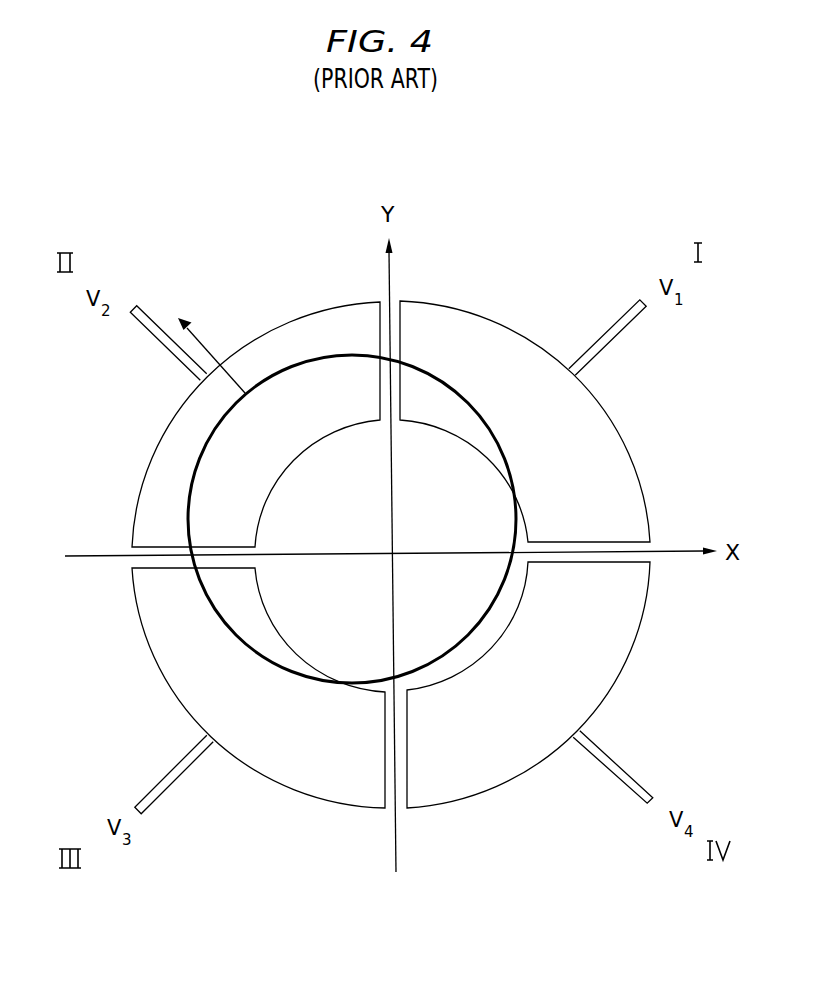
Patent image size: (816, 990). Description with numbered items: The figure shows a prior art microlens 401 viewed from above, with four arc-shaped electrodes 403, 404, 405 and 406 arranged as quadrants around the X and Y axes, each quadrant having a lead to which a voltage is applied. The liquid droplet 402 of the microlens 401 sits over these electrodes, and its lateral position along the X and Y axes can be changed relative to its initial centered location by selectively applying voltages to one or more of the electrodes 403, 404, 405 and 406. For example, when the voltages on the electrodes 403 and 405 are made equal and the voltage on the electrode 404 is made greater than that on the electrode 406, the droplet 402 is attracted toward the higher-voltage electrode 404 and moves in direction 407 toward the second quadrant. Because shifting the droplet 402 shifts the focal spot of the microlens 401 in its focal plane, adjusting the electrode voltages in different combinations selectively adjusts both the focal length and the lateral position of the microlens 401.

The microlens 401 is at (97, 183).
The droplet 402 is at (472, 402).
The electrode 403 is at (622, 437).
The electrode 404 is at (157, 443).
The electrode 405 is at (160, 673).
The electrode 406 is at (625, 668).
The direction 407 is at (203, 345).